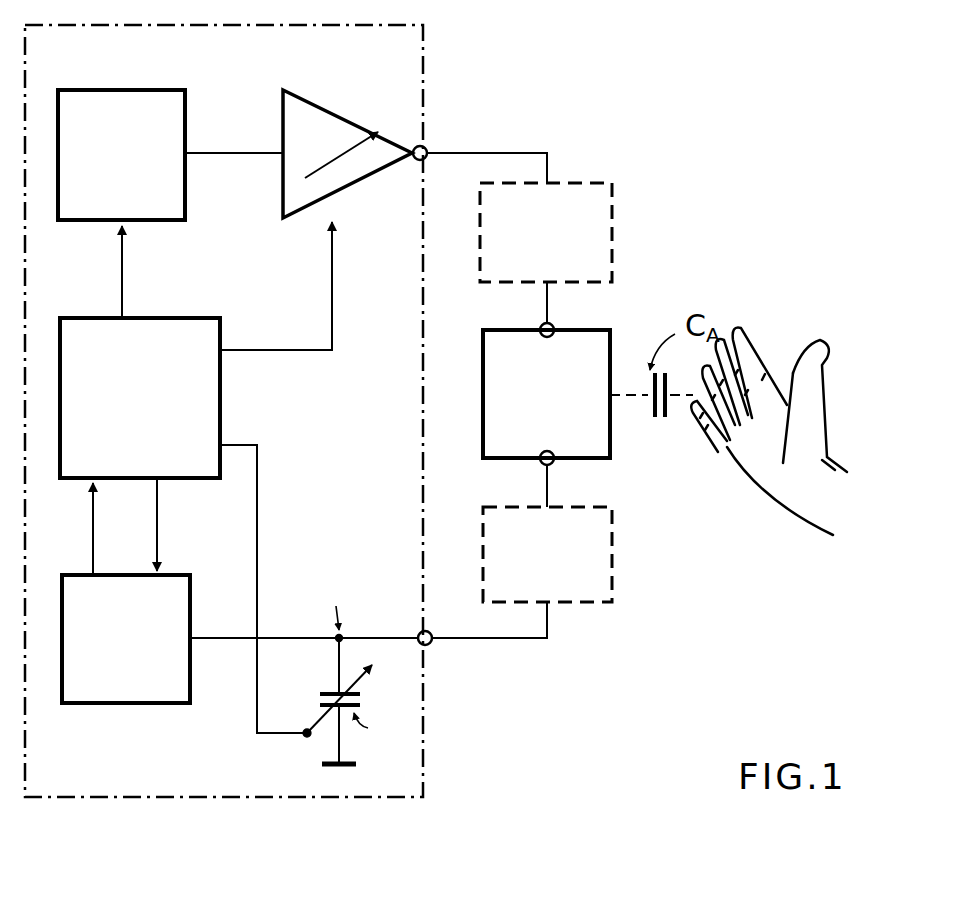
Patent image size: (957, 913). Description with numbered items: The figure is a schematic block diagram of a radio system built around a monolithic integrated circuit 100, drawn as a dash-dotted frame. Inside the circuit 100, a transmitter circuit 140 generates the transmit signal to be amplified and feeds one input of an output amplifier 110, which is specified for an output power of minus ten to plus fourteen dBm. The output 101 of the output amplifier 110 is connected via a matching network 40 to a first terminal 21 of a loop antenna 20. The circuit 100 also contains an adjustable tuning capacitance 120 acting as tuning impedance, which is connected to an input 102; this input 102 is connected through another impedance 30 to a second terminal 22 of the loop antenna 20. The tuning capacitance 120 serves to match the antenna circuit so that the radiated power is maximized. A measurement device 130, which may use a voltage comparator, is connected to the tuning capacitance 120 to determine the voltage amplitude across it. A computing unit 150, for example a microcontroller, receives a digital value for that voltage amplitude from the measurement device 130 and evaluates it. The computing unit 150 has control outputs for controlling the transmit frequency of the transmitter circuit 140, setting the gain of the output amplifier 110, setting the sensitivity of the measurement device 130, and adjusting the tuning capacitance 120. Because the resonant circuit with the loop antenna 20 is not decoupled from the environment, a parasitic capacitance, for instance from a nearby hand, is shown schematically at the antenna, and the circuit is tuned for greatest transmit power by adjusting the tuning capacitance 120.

The monolithic integrated circuit 100 is at (428, 49).
The output 101 is at (433, 146).
The input 102 is at (440, 647).
The output amplifier 110 is at (324, 99).
The adjustable tuning capacitance 120 is at (300, 745).
The measurement device 130 is at (116, 709).
The transmitter circuit 140 is at (167, 226).
The computing unit 150 is at (225, 392).
The loop antenna 20 is at (618, 441).
The first terminal 21 is at (557, 321).
The second terminal 22 is at (558, 467).
The impedance 30 is at (615, 568).
The matching network 40 is at (615, 200).